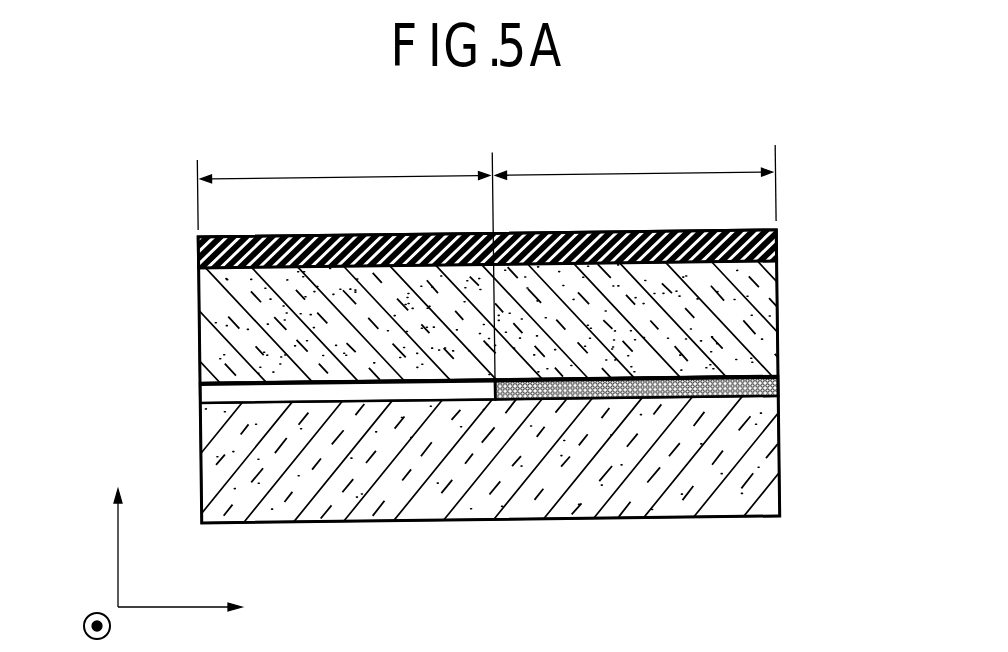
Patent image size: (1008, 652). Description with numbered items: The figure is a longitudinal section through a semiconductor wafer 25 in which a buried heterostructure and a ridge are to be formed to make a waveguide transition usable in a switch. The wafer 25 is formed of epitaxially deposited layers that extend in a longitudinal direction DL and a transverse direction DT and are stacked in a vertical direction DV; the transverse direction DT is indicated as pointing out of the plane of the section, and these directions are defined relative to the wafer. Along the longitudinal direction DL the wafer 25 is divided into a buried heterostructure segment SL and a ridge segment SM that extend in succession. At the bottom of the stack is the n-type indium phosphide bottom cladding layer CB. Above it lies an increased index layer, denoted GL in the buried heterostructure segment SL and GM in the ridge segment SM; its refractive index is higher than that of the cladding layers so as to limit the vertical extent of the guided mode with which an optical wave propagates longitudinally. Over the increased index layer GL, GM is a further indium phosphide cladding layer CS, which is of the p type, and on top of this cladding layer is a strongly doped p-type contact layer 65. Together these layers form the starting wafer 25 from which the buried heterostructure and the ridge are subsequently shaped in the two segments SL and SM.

The semiconductor wafer 25 is at (806, 282).
The strongly doped contact layer 65 is at (200, 250).
The cladding layer CS is at (243, 305).
The increased index layer GL is at (202, 394).
The increased index layer GM is at (778, 390).
The bottom cladding layer CB is at (752, 469).
The buried heterostructure segment SL is at (346, 259).
The ridge segment SM is at (635, 177).
The vertical direction DV is at (99, 546).
The longitudinal direction DL is at (198, 604).
The transverse direction DT is at (81, 628).